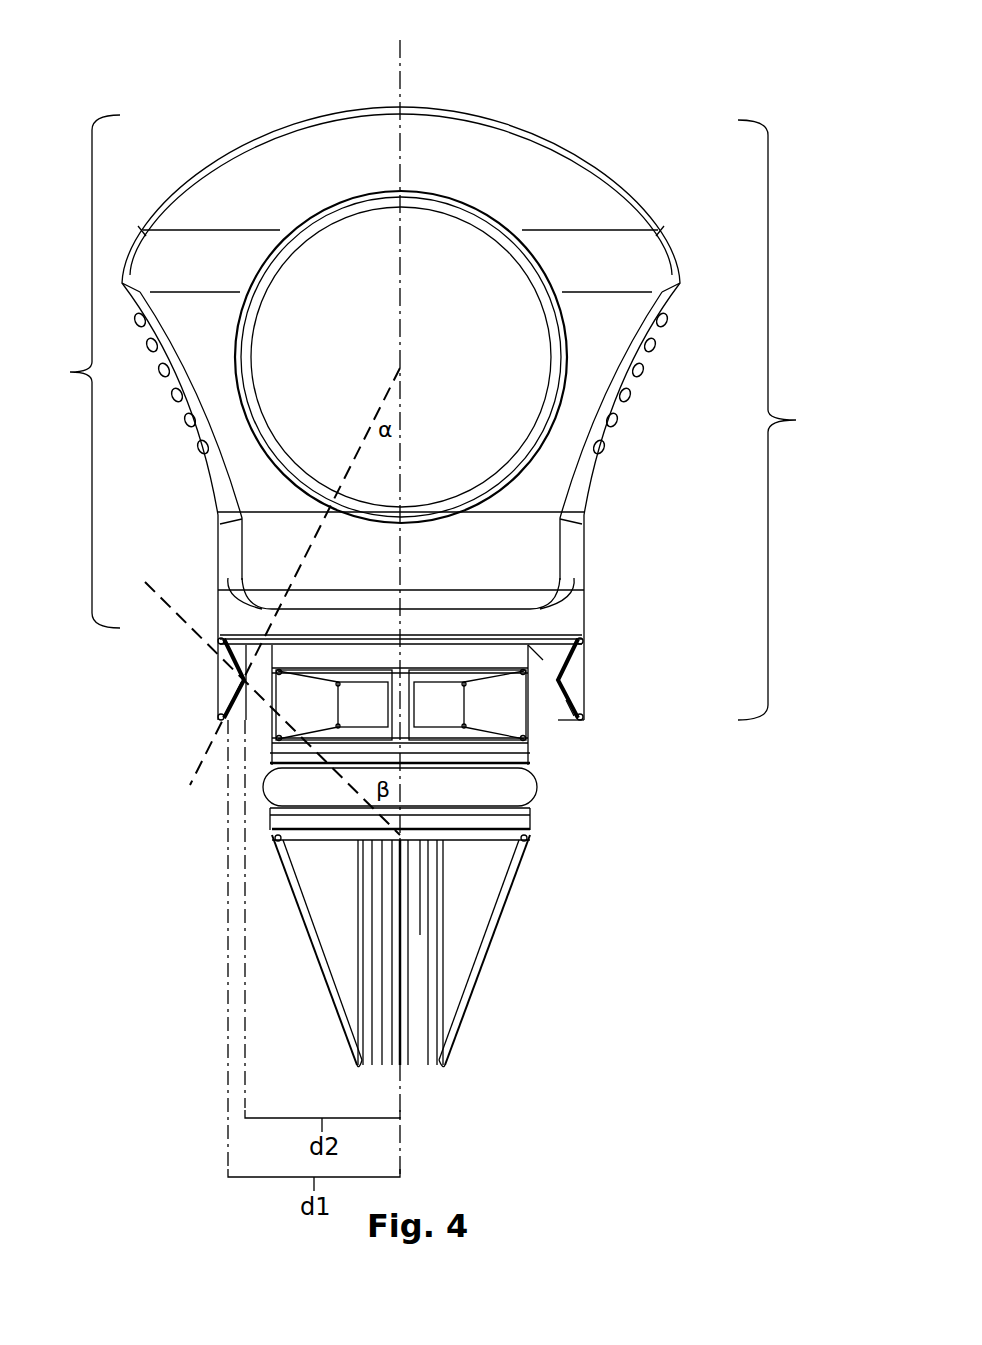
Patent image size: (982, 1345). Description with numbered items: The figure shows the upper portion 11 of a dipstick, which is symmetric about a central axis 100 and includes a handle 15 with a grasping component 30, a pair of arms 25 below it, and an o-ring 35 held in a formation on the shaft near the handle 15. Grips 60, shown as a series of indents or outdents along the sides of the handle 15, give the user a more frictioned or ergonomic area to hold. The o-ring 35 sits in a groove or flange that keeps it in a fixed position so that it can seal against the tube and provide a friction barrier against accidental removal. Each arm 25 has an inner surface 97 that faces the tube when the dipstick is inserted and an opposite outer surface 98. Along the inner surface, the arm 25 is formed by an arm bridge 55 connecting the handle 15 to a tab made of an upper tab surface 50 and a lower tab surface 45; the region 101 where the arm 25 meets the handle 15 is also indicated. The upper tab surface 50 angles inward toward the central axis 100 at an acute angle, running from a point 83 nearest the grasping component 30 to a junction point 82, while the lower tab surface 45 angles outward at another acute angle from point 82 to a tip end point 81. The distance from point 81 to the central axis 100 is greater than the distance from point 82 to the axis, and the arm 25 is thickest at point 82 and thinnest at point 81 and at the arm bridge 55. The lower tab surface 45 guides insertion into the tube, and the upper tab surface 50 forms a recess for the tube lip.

The central axis 100 is at (395, 593).
The upper portion 11 is at (786, 420).
The handle 15 is at (75, 371).
The grasping component 30 is at (520, 258).
The grips 60 is at (626, 395).
The upper tab surface 50 is at (272, 708).
The arm bridge 55 is at (216, 652).
The lower tab surface 45 is at (234, 690).
The arms 25 is at (583, 692).
The notch 101 is at (543, 652).
The point of the upper tab surface 83 is at (578, 655).
The point of the lower tab surface 82 is at (560, 680).
The inner surface 97 is at (566, 708).
The outer surface 98 is at (586, 706).
The point of the lower tab surface 81 is at (585, 722).
The o-ring 35 is at (537, 782).